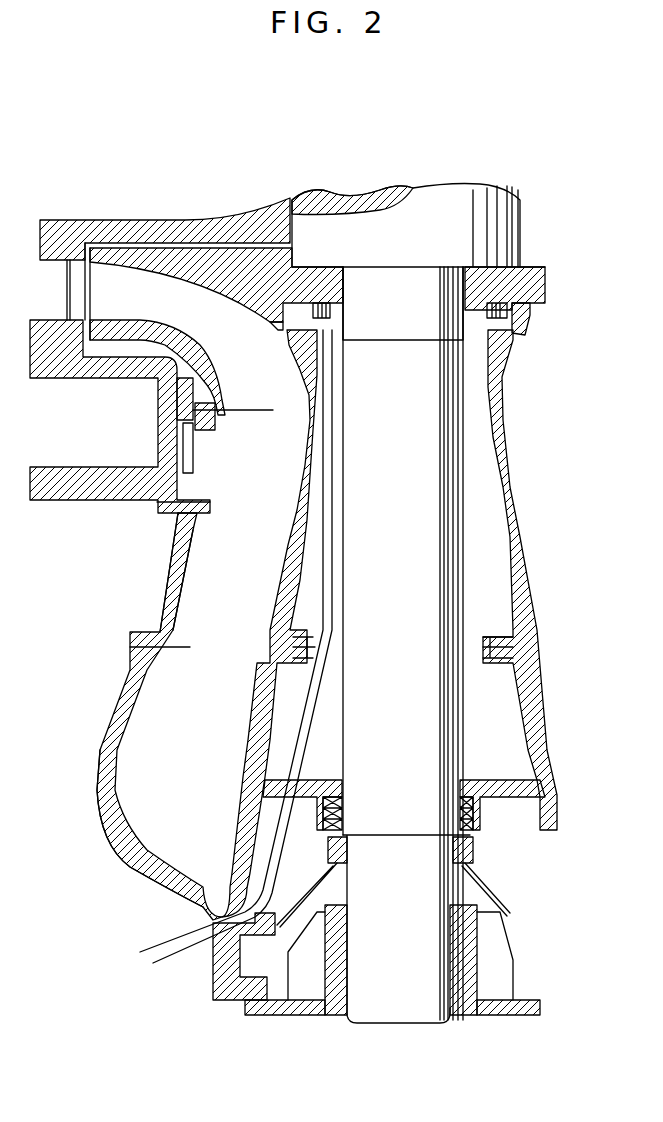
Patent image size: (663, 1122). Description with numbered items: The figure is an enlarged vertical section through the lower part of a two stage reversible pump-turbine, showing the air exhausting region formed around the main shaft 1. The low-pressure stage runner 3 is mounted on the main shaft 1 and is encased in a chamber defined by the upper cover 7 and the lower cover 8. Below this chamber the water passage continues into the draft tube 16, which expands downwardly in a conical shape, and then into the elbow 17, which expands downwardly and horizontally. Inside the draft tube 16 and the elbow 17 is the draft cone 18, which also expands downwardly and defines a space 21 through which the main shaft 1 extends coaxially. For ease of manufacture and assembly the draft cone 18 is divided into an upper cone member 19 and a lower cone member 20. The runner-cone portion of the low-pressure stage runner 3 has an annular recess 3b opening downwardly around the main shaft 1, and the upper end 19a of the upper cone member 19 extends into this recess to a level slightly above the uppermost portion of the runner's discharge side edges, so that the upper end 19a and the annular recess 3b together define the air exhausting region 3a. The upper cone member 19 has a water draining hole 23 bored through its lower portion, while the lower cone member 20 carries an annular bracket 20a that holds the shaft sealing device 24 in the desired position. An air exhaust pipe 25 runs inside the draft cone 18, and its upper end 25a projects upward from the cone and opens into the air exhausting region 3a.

The main shaft 1 is at (452, 695).
The low-pressure stage runner 3 is at (272, 262).
The air exhausting region 3a is at (278, 324).
The annular recess 3b is at (515, 318).
The upper cover 7 is at (150, 218).
The lower cover 8 is at (104, 370).
The draft tube 16 is at (173, 584).
The elbow 17 is at (108, 828).
The draft cone 18 is at (263, 670).
The upper cone member 19 is at (297, 513).
The upper end of the upper cone member 19a is at (222, 408).
The lower cone member 20 is at (242, 840).
The annular bracket 20a is at (510, 797).
The space 21 is at (495, 562).
The water draining hole 23 is at (282, 608).
The shaft sealing device 24 is at (320, 803).
The air exhaust pipe 25 is at (330, 562).
The upper end of the air exhaust pipe 25a is at (338, 323).